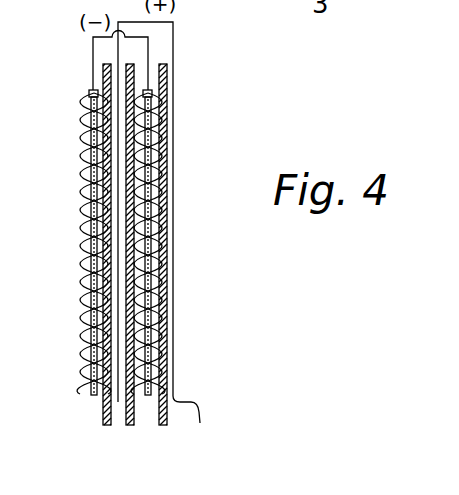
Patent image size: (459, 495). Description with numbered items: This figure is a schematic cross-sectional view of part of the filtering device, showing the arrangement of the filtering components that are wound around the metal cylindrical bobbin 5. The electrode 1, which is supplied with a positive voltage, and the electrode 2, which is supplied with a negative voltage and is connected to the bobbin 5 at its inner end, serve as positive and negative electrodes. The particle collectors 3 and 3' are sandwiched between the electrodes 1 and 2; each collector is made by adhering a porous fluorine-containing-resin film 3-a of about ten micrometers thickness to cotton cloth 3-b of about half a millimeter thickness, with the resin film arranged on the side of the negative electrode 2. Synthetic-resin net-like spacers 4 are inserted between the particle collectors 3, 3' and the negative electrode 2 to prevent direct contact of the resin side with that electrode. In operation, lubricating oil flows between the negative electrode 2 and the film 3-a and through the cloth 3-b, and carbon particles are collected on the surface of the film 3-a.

The electrode 1 is at (119, 404).
The electrode 2 is at (92, 398).
The particle collector 3 is at (133, 273).
The particle collector 3' is at (155, 253).
The fluorine-containing-resin film 3-a is at (161, 65).
The cotton cloth 3-b is at (201, 224).
The net-like spacer 4 is at (83, 373).
The metal cylindrical bobbin 5 is at (85, 243).